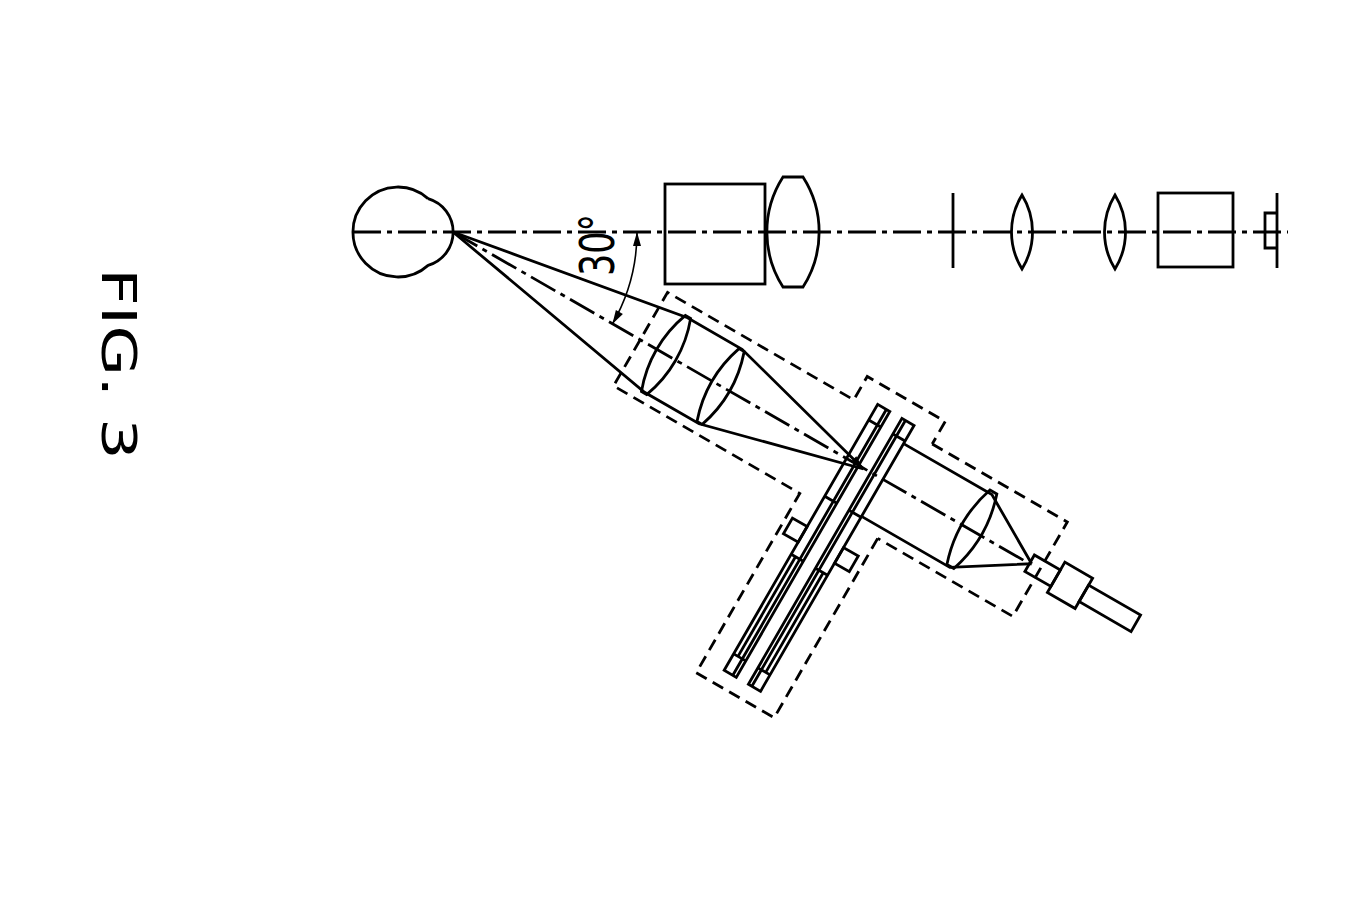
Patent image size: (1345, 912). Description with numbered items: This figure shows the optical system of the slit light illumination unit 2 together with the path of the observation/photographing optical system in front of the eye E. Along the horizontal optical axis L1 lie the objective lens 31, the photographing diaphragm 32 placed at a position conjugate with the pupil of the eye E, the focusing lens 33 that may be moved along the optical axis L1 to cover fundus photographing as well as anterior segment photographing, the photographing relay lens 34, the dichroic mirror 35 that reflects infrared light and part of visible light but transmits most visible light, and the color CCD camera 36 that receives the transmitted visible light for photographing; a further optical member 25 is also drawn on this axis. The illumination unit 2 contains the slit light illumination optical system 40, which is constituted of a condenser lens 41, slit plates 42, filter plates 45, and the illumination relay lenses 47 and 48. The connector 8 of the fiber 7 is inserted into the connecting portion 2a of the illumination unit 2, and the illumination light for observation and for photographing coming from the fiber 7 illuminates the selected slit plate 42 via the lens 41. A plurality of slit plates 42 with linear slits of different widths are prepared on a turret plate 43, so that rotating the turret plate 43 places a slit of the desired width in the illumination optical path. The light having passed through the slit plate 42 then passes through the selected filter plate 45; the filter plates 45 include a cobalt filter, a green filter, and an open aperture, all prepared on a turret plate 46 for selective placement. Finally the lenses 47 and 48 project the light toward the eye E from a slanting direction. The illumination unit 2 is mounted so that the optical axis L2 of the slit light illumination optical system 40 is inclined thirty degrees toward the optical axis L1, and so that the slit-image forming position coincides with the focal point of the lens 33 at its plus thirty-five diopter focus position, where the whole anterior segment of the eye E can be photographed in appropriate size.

The eye E is at (377, 258).
The optical axis L1 is at (503, 232).
The optical axis L2 is at (580, 311).
The beam splitter / optical unit 25 is at (715, 184).
The objective lens 31 is at (816, 176).
The photographing diaphragm 32 is at (953, 193).
The focusing lens 33 is at (1027, 200).
The photographing relay lens 34 is at (1119, 203).
The dichroic mirror 35 is at (1207, 193).
The color CCD camera 36 is at (1279, 213).
The illumination relay lens 48 is at (638, 392).
The illumination relay lens 47 is at (698, 428).
The slit light illumination optical system 40 is at (668, 535).
The illumination unit 2 is at (958, 458).
The slit plates 42 is at (905, 452).
The filter plates 45 is at (763, 600).
The turret plate 46 is at (728, 678).
The turret plate 43 is at (751, 697).
The condenser lens 41 is at (948, 568).
The connecting portion 2a is at (1041, 590).
The connector 8 is at (1083, 570).
The optical fiber 7 is at (1122, 598).